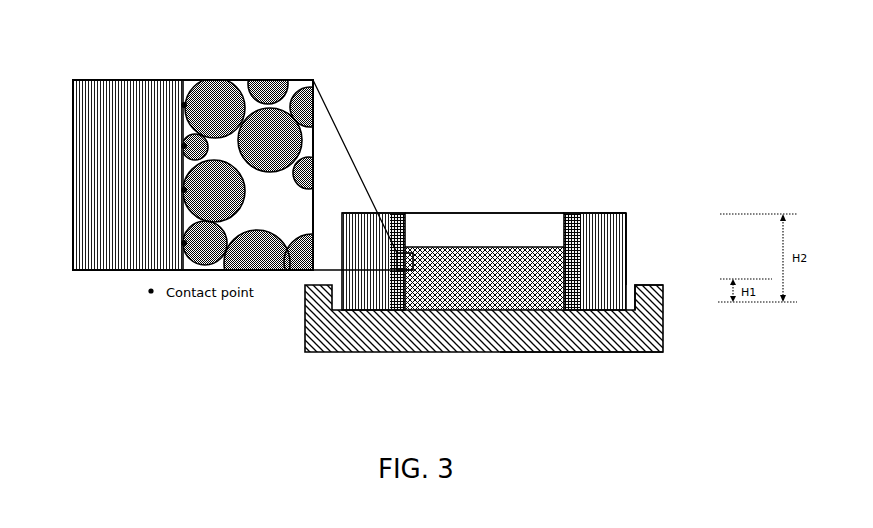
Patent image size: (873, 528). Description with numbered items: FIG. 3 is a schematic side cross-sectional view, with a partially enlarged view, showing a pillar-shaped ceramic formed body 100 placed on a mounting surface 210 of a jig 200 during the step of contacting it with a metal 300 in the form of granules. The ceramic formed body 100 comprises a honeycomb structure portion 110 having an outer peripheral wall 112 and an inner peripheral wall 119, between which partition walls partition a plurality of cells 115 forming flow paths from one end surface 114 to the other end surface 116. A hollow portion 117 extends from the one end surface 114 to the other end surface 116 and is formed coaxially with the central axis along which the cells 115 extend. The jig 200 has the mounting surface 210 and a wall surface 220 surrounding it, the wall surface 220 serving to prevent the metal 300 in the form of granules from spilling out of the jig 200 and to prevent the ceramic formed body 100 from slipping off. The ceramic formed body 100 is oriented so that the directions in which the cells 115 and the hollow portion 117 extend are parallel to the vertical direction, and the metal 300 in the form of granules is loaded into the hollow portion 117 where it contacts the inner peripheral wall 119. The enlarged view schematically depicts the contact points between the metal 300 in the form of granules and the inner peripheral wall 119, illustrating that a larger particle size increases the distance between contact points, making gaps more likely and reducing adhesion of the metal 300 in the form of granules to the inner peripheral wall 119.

The ceramic formed body 100 is at (538, 201).
The honeycomb structure portion 110 is at (585, 212).
The outer peripheral wall 112 is at (628, 230).
The one end surface 114 is at (617, 212).
The cells 115 is at (617, 262).
The other end surface 116 is at (579, 353).
The hollow portion 117 is at (495, 229).
The inner peripheral wall 119 is at (183, 128).
The jig 200 is at (520, 332).
The mounting surface 210 is at (623, 353).
The wall surface 220 is at (634, 290).
The metal in the form of granules 300 is at (215, 86).